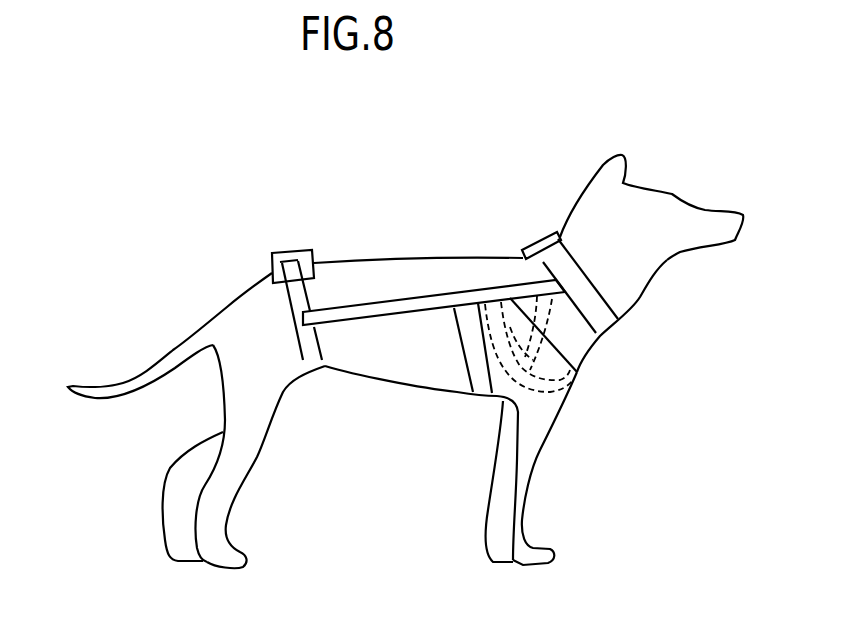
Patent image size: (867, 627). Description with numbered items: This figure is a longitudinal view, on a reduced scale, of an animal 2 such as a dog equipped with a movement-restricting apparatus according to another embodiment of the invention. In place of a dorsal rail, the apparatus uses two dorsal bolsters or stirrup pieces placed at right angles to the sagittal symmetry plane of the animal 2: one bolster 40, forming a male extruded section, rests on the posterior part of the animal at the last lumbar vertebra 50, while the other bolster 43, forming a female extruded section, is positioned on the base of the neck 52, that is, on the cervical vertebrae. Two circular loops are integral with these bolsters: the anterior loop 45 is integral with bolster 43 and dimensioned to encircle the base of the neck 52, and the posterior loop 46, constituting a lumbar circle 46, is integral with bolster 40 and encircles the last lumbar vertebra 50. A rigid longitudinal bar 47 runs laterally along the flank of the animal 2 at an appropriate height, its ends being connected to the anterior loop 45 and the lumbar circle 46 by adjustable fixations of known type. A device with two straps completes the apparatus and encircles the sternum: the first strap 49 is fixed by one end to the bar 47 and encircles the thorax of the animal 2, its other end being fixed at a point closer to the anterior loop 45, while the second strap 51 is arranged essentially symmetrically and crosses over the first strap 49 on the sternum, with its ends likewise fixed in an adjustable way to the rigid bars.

The animal 2 is at (377, 312).
The dorsal bolster 40 is at (305, 240).
The dorsal bolster 43 is at (537, 232).
The anterior circular loop 45 is at (598, 331).
The lumbar circle 46 is at (320, 372).
The rigid longitudinal bar 47 is at (369, 327).
The first strap 49 is at (468, 327).
The last lumbar vertebra 50 is at (262, 271).
The second strap 51 is at (565, 349).
The base of the neck 52 is at (620, 293).